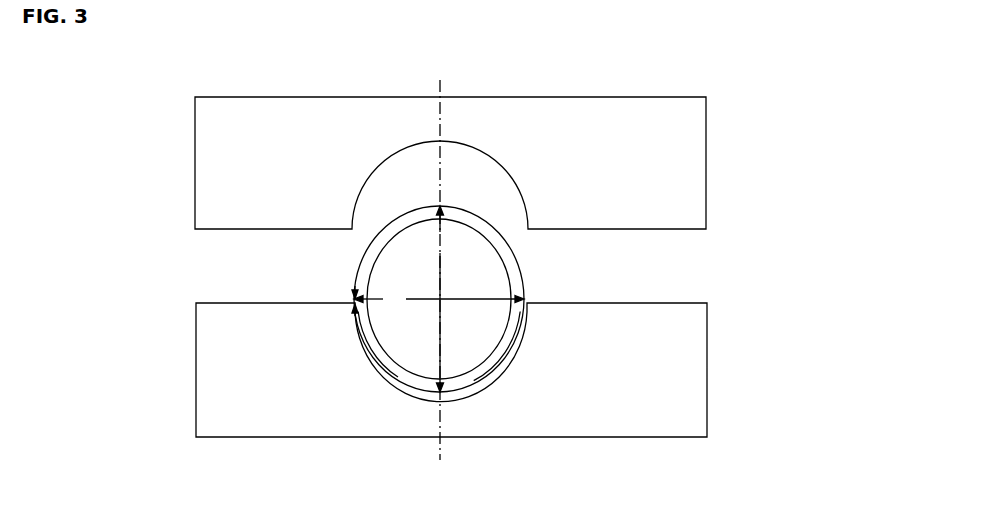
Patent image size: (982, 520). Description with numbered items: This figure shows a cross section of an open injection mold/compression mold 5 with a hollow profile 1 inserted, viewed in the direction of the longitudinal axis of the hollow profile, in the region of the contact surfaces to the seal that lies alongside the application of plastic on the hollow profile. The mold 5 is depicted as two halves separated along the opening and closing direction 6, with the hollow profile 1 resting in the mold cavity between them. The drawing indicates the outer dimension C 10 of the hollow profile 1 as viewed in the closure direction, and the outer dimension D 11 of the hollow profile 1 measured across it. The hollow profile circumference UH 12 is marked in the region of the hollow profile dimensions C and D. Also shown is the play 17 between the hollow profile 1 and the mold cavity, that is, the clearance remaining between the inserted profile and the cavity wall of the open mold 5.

The hollow profile 1 is at (492, 372).
The injection mold/compression mold 5 is at (240, 387).
The opening and closing direction 6 is at (437, 130).
The outer dimension C of the hollow profile 10 is at (440, 277).
The outer dimension D of the hollow profile 11 is at (425, 300).
The hollow profile circumference UH 12 is at (354, 289).
The play between hollow profile and mold cavity 17 is at (354, 319).